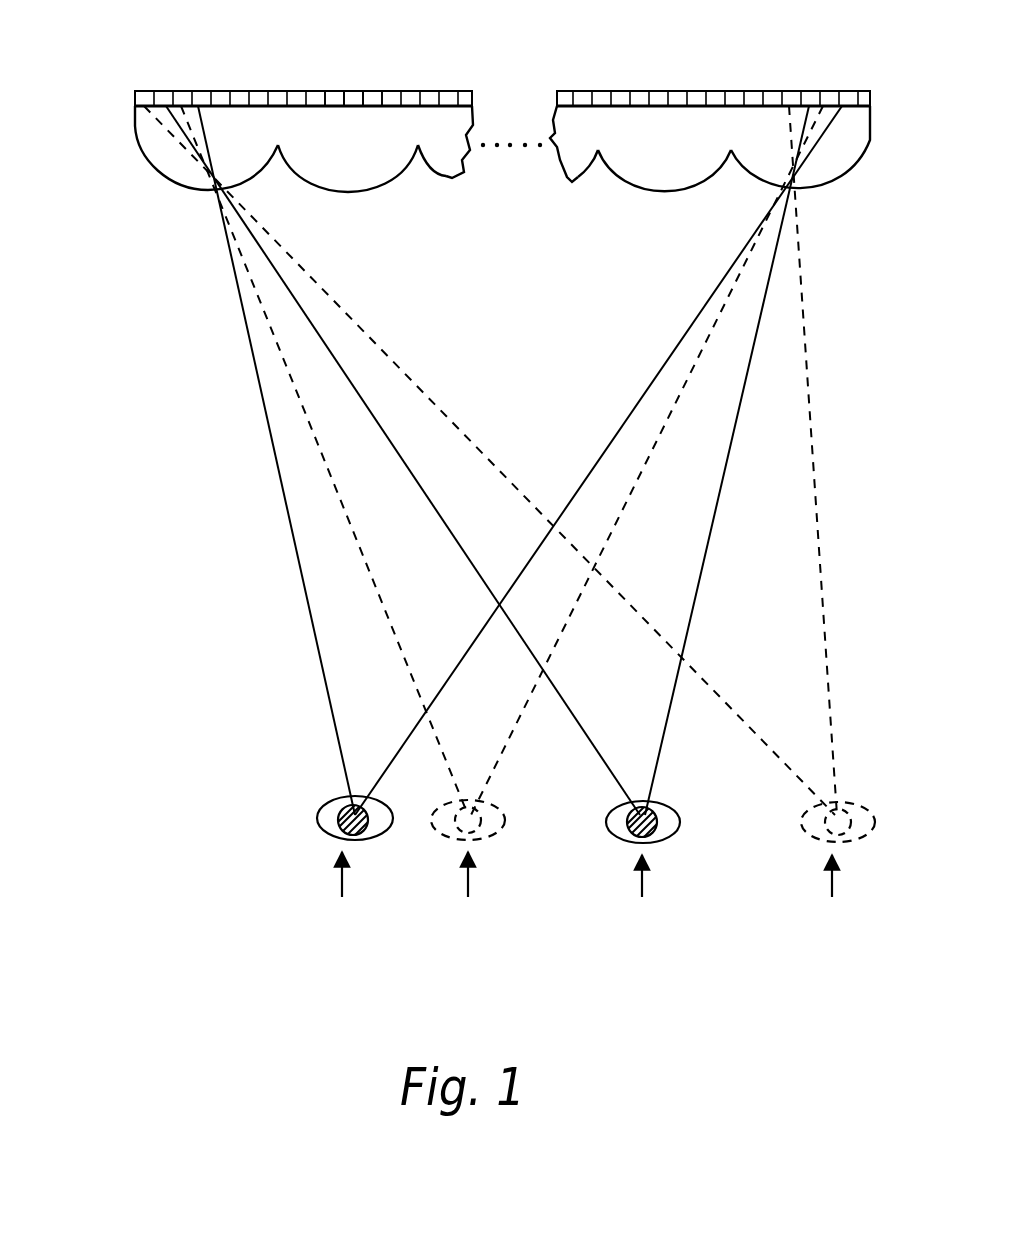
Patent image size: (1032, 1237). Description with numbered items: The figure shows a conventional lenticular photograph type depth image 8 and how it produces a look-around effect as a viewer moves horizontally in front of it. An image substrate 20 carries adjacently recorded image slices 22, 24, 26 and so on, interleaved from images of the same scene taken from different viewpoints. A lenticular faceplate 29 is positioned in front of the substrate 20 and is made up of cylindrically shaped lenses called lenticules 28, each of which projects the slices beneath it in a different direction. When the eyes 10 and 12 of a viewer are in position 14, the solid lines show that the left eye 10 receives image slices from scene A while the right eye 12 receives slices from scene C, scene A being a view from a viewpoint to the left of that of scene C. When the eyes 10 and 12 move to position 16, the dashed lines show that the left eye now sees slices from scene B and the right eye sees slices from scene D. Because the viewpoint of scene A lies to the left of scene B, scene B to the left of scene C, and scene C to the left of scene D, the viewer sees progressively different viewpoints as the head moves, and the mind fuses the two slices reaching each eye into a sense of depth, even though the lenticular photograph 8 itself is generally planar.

The lenticular photograph type depth image 8 is at (124, 176).
The left eye 10 is at (318, 808).
The right eye 12 is at (676, 836).
The viewing position 14 is at (487, 890).
The viewing position 16 is at (647, 892).
The image substrate 20 is at (489, 97).
The image slice 22 is at (332, 90).
The image slice 24 is at (348, 90).
The image slice 26 is at (367, 90).
The lenticule 28 is at (380, 190).
The lenticular faceplate 29 is at (871, 134).
The scene A is at (200, 90).
The scene B is at (178, 90).
The scene C is at (157, 90).
The scene D is at (143, 90).